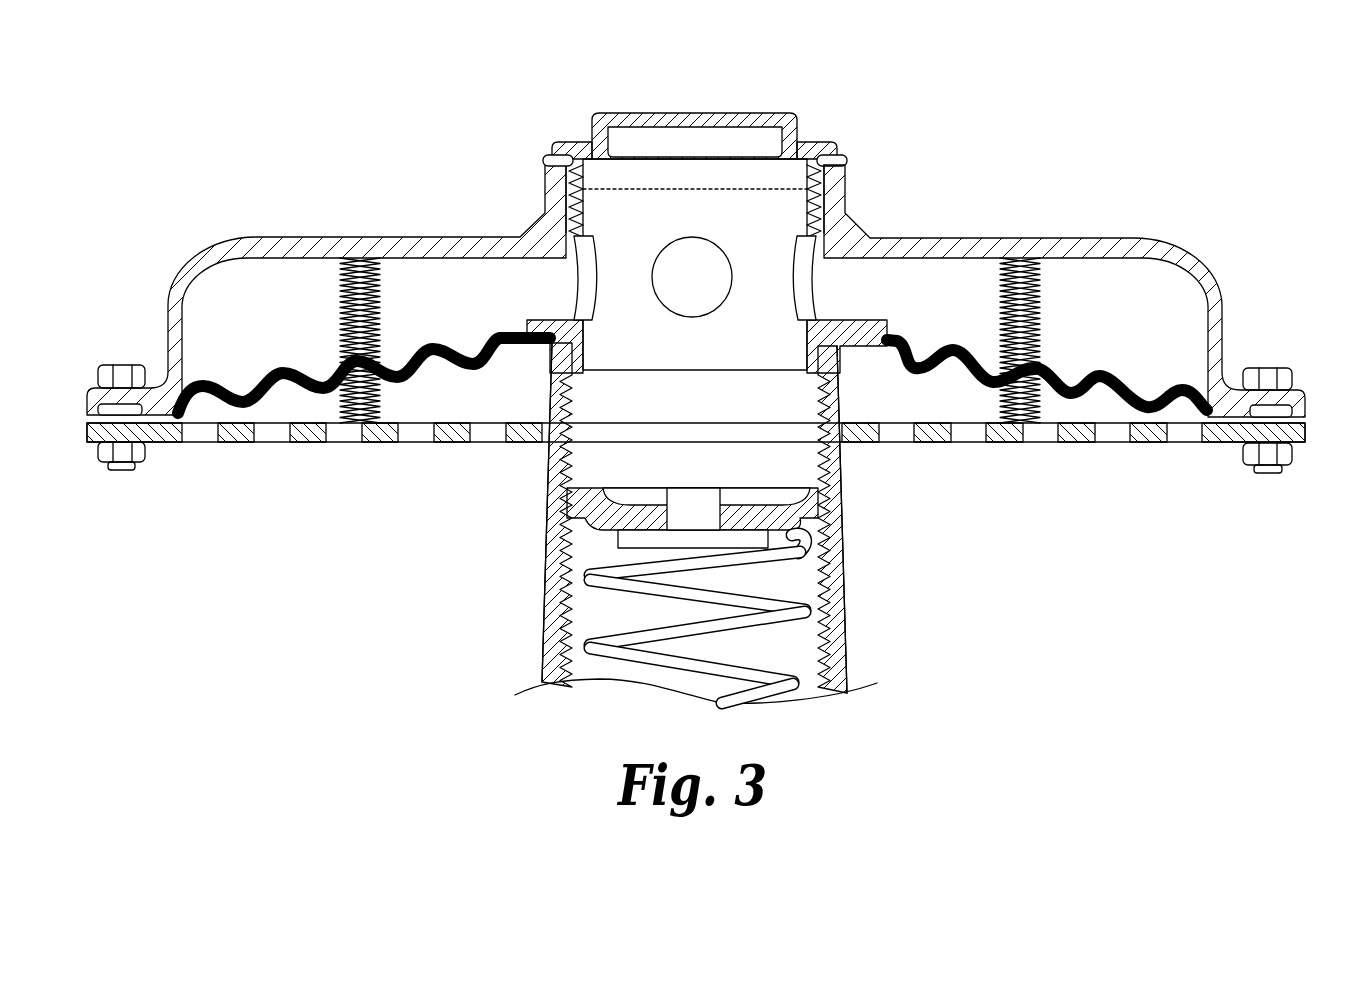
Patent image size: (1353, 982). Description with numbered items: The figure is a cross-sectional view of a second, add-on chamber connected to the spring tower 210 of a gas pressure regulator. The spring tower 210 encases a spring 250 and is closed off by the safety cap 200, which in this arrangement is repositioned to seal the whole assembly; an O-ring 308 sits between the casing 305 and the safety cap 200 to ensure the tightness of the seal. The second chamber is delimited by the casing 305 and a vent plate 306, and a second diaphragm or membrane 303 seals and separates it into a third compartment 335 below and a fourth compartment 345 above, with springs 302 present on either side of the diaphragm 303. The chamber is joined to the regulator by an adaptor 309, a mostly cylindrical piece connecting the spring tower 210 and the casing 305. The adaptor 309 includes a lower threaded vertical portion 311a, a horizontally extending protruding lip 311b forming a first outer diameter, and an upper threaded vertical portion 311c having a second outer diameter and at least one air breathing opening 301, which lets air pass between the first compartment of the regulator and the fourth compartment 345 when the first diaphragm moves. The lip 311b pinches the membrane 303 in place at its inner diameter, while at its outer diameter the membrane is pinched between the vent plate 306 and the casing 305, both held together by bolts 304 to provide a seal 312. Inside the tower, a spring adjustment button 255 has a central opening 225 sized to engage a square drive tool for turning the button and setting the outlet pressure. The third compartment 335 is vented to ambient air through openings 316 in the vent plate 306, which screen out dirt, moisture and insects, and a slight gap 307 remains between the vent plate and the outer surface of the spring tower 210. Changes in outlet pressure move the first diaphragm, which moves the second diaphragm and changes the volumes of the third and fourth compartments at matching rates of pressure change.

The safety cap 200 is at (697, 108).
The spring tower 210 is at (848, 650).
The opening 225 is at (693, 495).
The spring 250 is at (585, 577).
The spring adjustment button 255 is at (822, 503).
The opening 301 is at (690, 318).
The springs 302 is at (1047, 378).
The second diaphragm 303 is at (266, 378).
The bolts 304 is at (105, 465).
The casing 305 is at (278, 233).
The vent plate 306 is at (330, 444).
The gap 307 is at (843, 448).
The O-ring 308 is at (545, 160).
The adaptor 309 is at (803, 372).
The lower threaded vertical portion 311a is at (578, 360).
The protruding lip 311b is at (838, 328).
The upper threaded vertical portion 311c is at (822, 212).
The seal 312 is at (1305, 410).
The openings 316 is at (397, 444).
The third compartment 335 is at (1115, 444).
The fourth compartment 345 is at (935, 268).